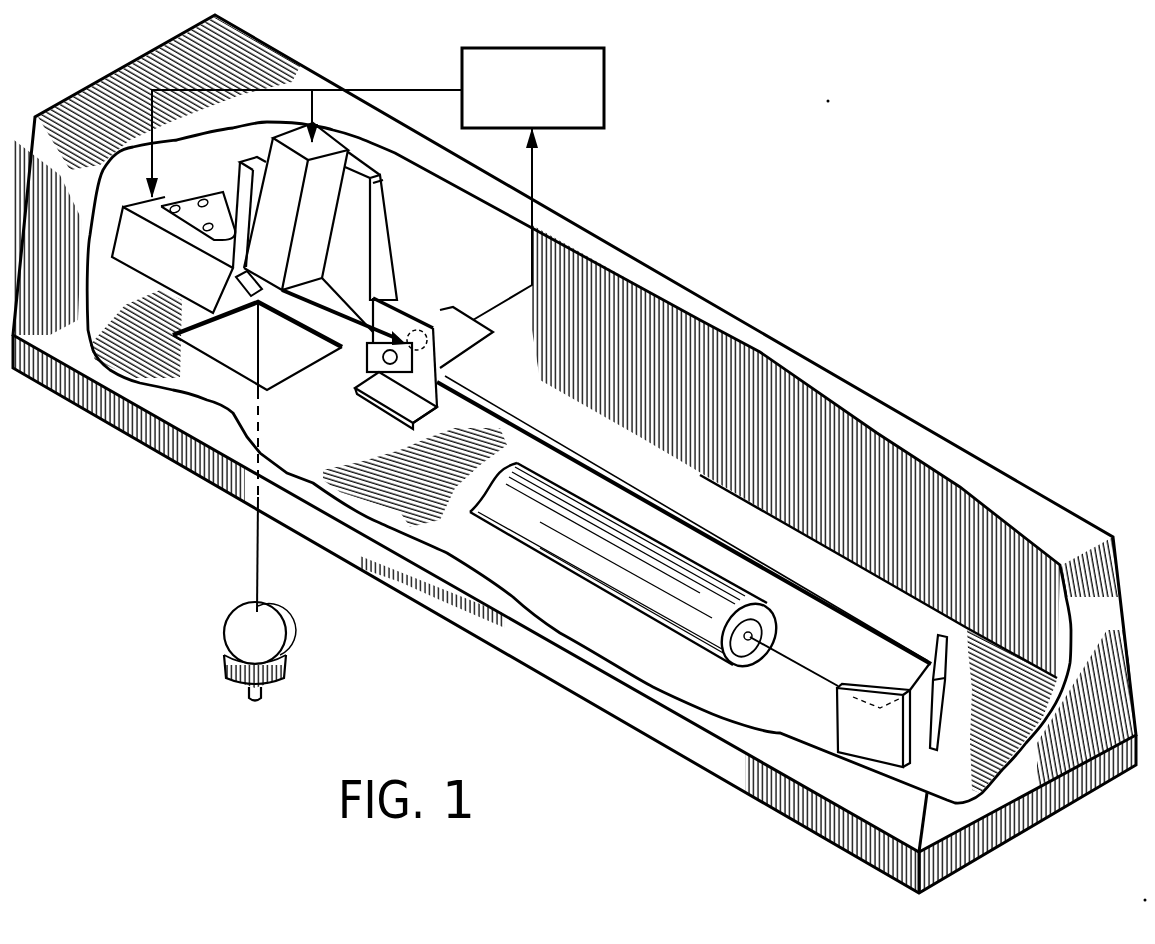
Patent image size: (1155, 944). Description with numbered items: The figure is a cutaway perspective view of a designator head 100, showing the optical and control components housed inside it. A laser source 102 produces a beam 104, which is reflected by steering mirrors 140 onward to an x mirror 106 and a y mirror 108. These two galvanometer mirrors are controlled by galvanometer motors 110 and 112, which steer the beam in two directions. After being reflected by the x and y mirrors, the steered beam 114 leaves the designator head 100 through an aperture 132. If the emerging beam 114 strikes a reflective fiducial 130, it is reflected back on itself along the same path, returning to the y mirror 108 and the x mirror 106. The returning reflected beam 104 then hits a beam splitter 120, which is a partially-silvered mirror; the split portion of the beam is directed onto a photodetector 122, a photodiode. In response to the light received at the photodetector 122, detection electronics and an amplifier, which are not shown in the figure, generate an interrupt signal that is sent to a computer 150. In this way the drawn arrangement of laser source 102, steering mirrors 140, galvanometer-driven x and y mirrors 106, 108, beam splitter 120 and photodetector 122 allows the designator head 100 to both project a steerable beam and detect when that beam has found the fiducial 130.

The designator head 100 is at (968, 448).
The laser source 102 is at (641, 597).
The beam 104 is at (684, 554).
The x mirror 106 is at (287, 291).
The y mirror 108 is at (250, 297).
The galvanometer motor 110 is at (316, 228).
The galvanometer motor 112 is at (191, 275).
The beam 114 is at (262, 330).
The beam splitter 120 is at (382, 372).
The photodetector 122 is at (405, 325).
The reflective fiducial 130 is at (238, 613).
The aperture 132 is at (303, 373).
The steering mirrors 140 is at (930, 663).
The computer 150 is at (551, 119).